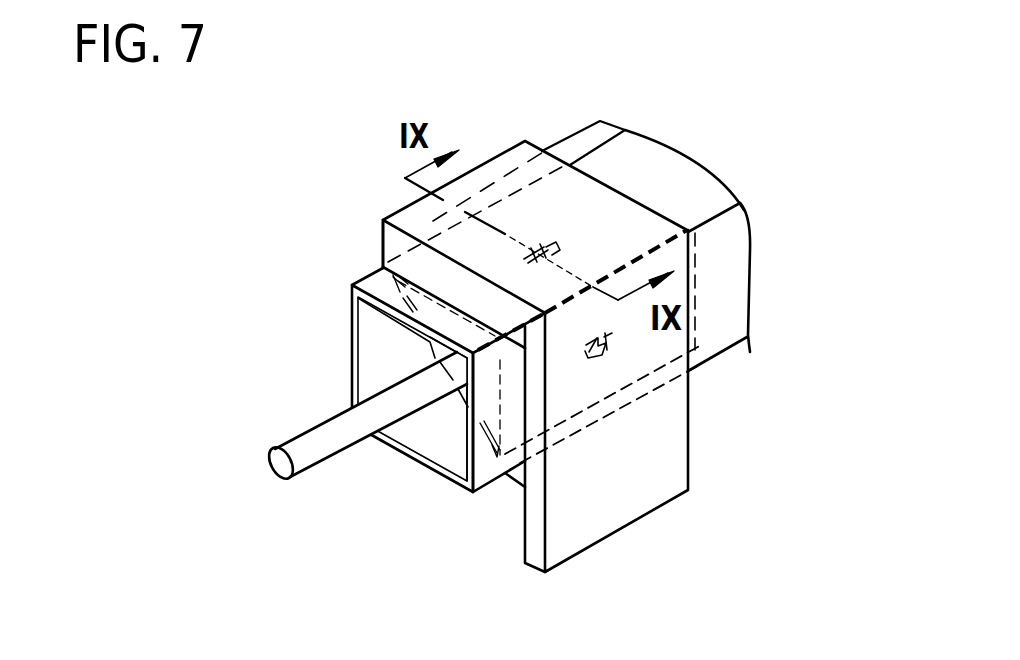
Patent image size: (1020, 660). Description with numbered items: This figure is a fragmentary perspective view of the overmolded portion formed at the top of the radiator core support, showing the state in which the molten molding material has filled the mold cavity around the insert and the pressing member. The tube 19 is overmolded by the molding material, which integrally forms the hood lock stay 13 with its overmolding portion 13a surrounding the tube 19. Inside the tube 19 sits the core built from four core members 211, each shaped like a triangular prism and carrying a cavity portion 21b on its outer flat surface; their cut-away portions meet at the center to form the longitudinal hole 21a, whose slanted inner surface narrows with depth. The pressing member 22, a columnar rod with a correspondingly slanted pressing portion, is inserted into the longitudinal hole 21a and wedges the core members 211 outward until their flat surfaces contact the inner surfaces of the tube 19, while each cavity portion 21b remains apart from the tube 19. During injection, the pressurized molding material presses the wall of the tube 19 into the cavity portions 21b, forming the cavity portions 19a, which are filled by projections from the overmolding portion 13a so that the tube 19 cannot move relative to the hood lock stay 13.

The hood lock stay 13 is at (662, 456).
The overmolding portion 13a is at (412, 208).
The tube 19 is at (385, 262).
The cavity portion 19a is at (543, 252).
The longitudinal hole 21a is at (453, 356).
The cavity portion 21b is at (545, 249).
The core member 211 is at (615, 205).
The pressing member 22 is at (300, 438).